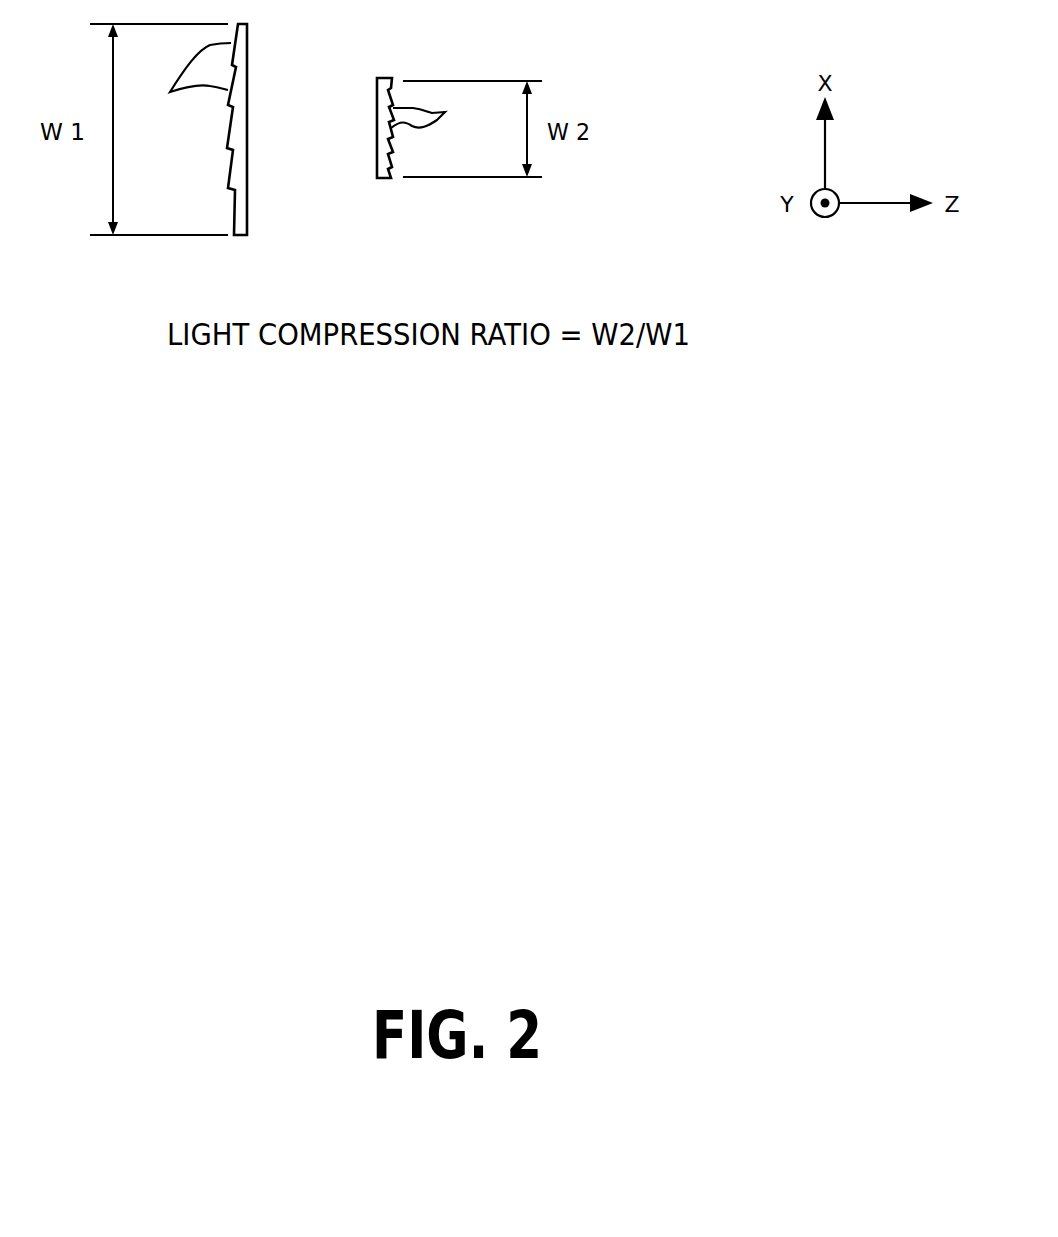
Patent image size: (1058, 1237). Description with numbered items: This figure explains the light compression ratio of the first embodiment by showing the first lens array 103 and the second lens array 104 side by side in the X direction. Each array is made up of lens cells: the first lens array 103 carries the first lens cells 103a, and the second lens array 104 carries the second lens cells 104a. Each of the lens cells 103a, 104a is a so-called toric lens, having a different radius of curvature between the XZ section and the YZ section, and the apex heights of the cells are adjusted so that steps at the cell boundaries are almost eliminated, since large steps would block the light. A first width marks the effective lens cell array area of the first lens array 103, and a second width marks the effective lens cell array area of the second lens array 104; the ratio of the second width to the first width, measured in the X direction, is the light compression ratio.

The first lens array 103 is at (240, 218).
The first lens cell 103a is at (178, 82).
The second lens array 104 is at (383, 178).
The second lens cell 104a is at (448, 108).